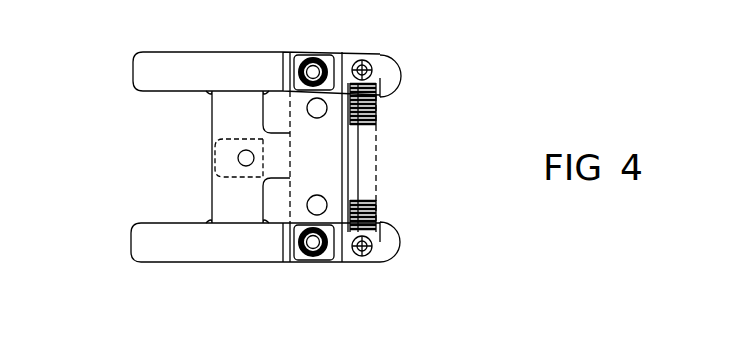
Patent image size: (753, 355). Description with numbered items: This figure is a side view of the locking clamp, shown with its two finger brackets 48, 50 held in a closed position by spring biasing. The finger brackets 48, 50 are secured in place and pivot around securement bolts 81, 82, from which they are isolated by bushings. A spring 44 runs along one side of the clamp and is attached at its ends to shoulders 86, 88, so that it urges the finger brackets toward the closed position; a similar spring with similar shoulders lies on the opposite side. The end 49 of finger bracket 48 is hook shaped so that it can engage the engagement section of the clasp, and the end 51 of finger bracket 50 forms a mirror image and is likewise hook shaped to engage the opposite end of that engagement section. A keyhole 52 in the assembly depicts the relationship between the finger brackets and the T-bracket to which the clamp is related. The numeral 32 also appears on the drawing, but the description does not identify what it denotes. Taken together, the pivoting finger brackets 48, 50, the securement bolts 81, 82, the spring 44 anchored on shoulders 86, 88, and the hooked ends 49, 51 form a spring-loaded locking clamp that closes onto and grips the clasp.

The latch assembly 32 is at (284, 131).
The spring 44 is at (377, 152).
The finger bracket 48 is at (131, 250).
The end of finger bracket 49 is at (400, 243).
The finger bracket 50 is at (133, 63).
The end of finger bracket 51 is at (400, 75).
The keyhole 52 is at (237, 158).
The securement bolt 81 is at (302, 257).
The securement bolt 82 is at (322, 60).
The shoulder 86 is at (387, 262).
The shoulder 88 is at (372, 64).